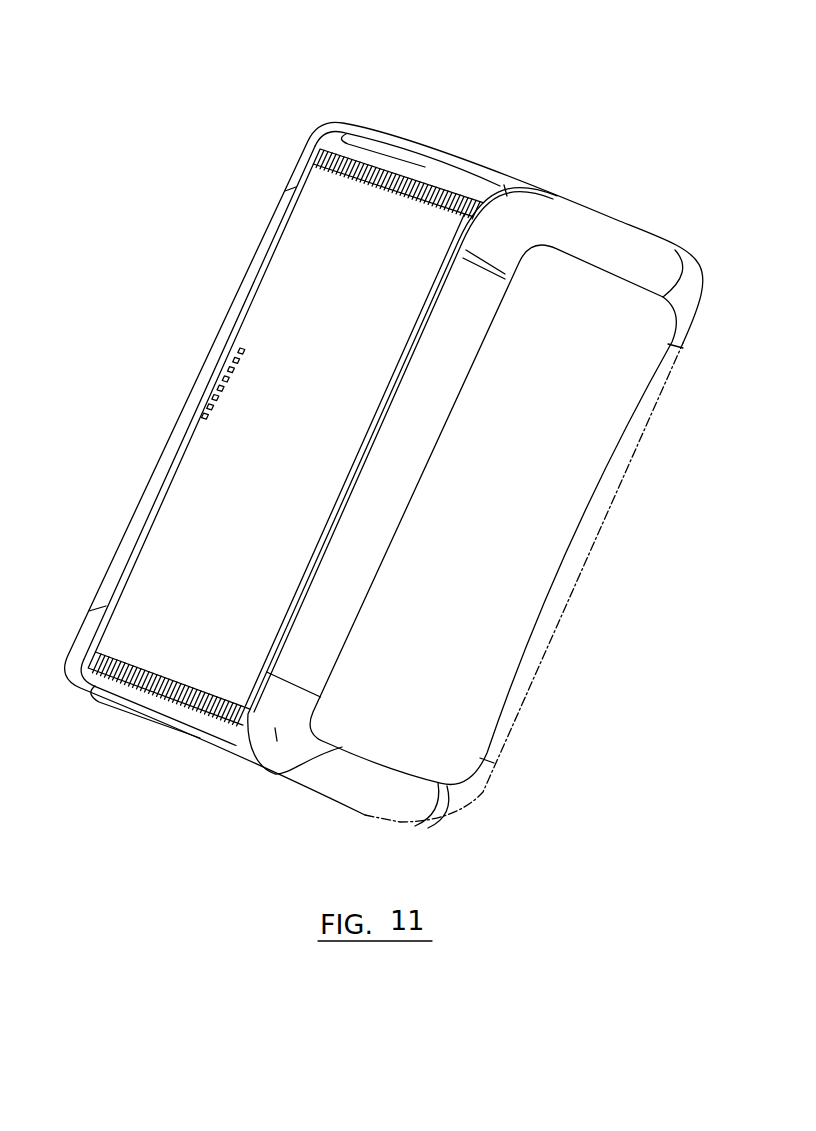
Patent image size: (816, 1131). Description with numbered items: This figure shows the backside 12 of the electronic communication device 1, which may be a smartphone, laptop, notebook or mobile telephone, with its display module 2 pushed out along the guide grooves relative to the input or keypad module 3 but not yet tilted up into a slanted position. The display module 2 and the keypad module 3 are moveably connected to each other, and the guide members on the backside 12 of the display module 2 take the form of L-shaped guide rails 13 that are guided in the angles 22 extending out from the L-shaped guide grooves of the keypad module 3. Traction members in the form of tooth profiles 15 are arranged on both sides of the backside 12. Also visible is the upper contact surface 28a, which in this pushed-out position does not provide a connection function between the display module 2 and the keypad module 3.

The electronic communication device 1 is at (311, 98).
The display module 2 is at (362, 137).
The keypad module 3 is at (562, 522).
The backside 12 is at (267, 302).
The guide rails 13 is at (384, 156).
The tooth profiles 15 is at (306, 160).
The angles 22 is at (447, 172).
The upper contact surface 28a is at (217, 395).